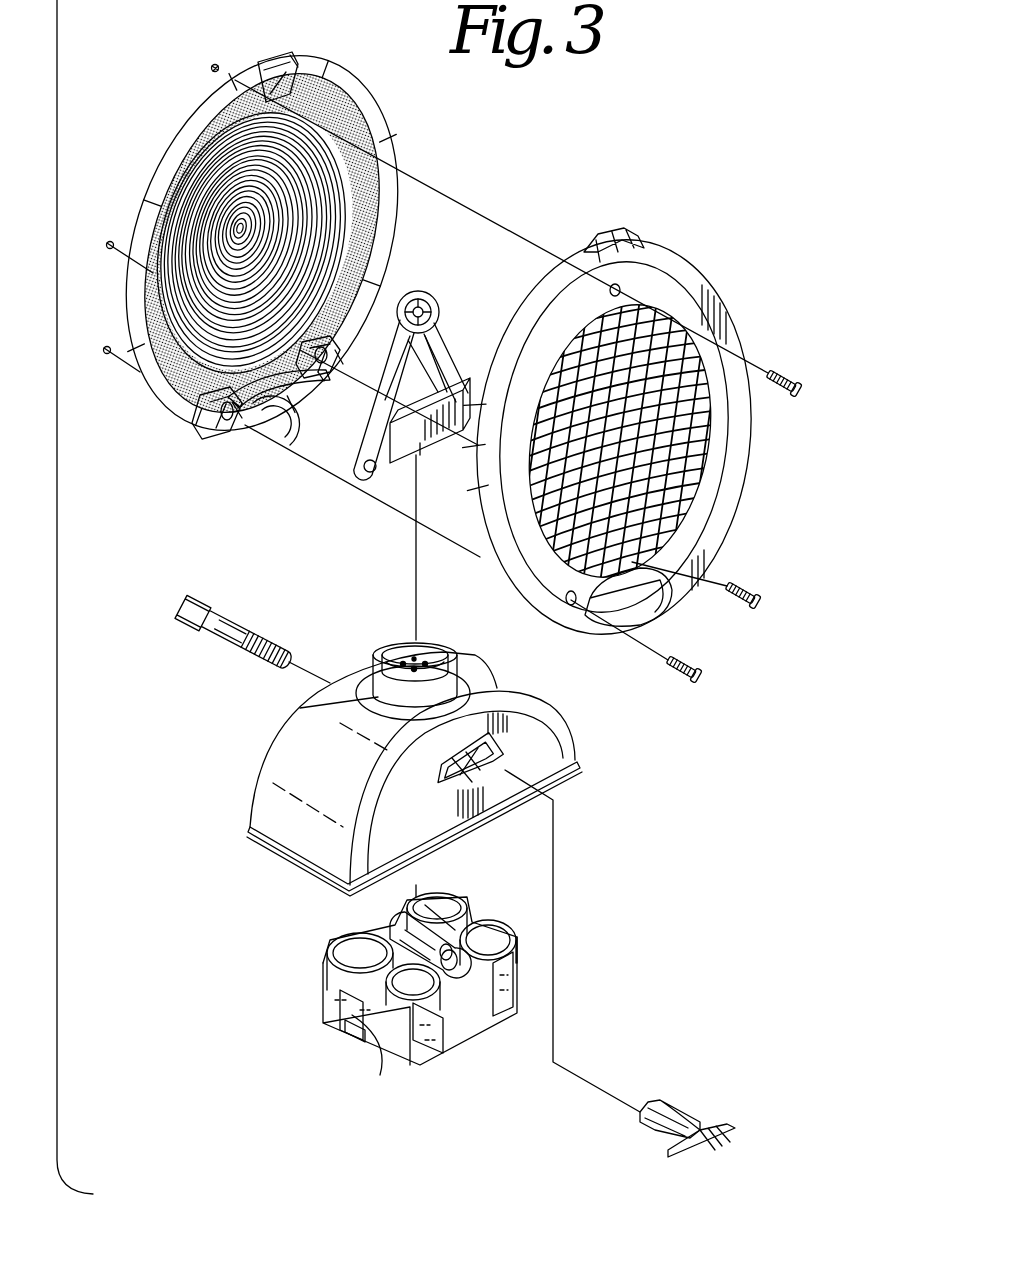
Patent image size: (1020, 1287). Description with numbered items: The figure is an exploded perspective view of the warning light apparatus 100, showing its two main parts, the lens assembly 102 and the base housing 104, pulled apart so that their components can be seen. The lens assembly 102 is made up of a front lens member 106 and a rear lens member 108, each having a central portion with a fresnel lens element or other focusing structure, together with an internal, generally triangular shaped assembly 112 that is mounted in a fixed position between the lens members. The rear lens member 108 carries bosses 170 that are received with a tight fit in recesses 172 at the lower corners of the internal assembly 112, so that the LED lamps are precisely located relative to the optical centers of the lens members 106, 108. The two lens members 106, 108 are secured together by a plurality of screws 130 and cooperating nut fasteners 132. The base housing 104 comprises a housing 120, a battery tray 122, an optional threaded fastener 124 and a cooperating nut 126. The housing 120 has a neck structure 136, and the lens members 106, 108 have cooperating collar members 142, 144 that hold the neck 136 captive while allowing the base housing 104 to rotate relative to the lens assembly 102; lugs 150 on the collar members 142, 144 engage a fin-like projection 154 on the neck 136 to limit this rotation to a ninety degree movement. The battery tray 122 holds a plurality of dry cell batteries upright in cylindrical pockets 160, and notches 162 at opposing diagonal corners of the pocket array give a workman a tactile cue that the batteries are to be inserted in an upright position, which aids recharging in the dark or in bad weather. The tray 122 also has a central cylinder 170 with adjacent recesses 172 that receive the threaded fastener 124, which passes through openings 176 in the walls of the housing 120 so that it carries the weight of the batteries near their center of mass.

The apparatus 100 is at (712, 118).
The lens assembly 102 is at (527, 237).
The base housing 104 is at (616, 797).
The front lens member 106 is at (684, 280).
The rear lens member 108 is at (196, 138).
The internal assembly 112 is at (448, 350).
The housing 120 is at (300, 765).
The battery tray 122 is at (323, 1008).
The threaded fastener 124 is at (642, 1100).
The nut 126 is at (190, 590).
The screws 130 is at (780, 372).
The nut fasteners 132 is at (247, 103).
The neck structure 136 is at (412, 640).
The collar member 142 is at (665, 630).
The collar member 144 is at (282, 420).
The lugs 150 is at (255, 430).
The fin-like projection 154 is at (300, 708).
The cylindrical pockets 160 is at (492, 935).
The notches 162 is at (450, 900).
The central cylinder 170 is at (397, 268).
The recesses 172 is at (480, 430).
The openings 176 is at (497, 745).